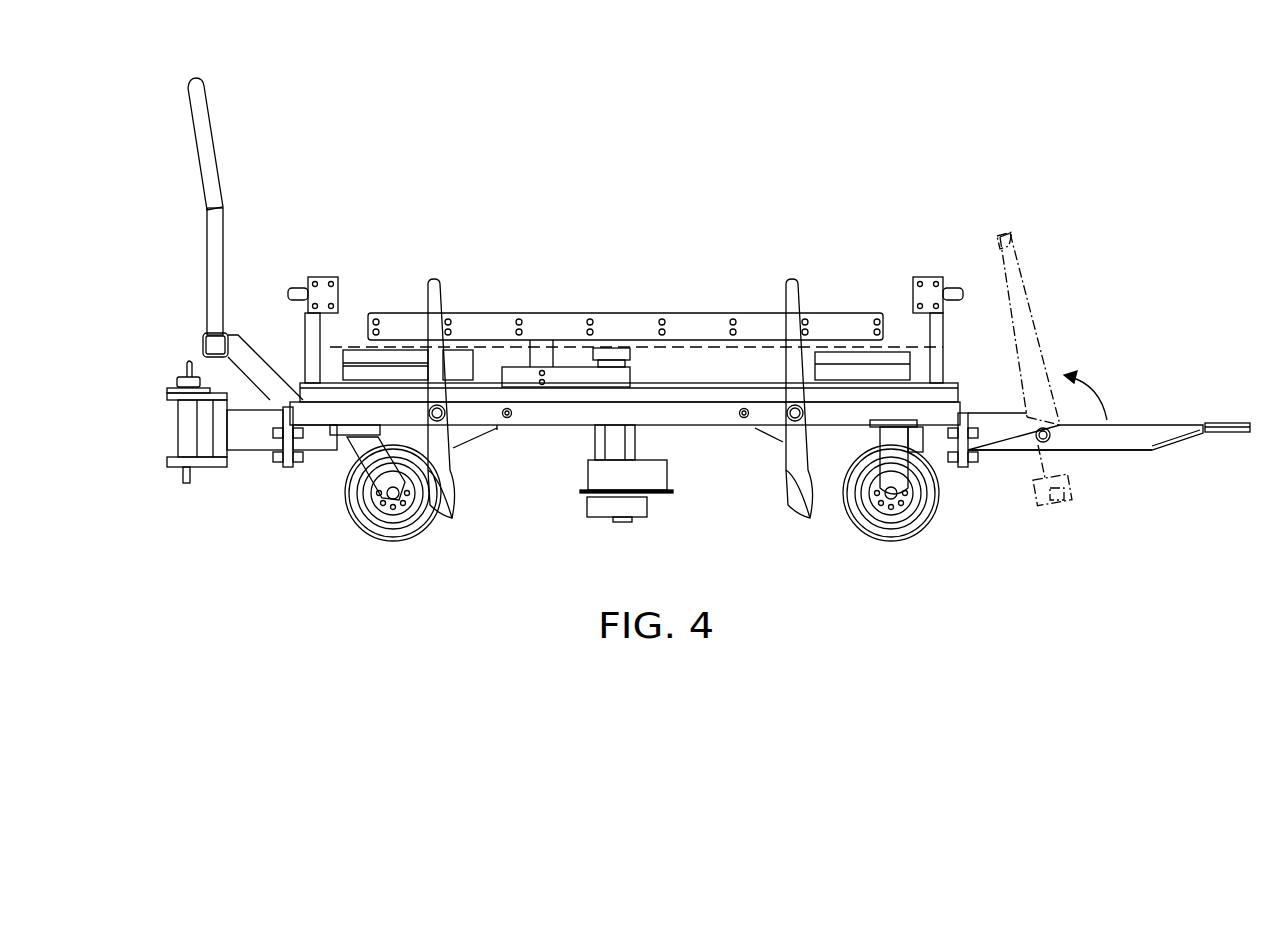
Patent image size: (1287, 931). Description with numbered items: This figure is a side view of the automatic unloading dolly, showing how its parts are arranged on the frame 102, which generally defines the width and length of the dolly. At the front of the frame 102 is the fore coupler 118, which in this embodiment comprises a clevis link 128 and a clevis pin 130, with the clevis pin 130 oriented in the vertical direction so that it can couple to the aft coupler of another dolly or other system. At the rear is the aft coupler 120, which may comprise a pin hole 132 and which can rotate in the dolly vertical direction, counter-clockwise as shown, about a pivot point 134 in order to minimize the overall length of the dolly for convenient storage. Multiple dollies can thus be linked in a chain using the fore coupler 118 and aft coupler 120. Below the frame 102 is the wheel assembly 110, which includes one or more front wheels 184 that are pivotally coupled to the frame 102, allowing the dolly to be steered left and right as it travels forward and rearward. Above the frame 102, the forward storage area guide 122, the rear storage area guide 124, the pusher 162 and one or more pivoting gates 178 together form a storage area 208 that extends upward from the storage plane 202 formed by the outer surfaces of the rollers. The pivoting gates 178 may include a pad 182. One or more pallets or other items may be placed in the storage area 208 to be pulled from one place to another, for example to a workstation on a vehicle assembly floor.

The frame 102 is at (518, 518).
The wheel assembly 110 is at (948, 576).
The fore coupler 118 is at (196, 468).
The aft coupler 120 is at (1135, 432).
The forward storage area guide 122 is at (325, 279).
The rear storage area guide 124 is at (922, 279).
The clevis link 128 is at (168, 392).
The clevis pin 130 is at (185, 445).
The pin hole 132 is at (1236, 412).
The pivot point 134 is at (1050, 437).
The pusher 162 is at (555, 316).
The pivoting gate 178 is at (432, 279).
The pad 182 is at (887, 532).
The front wheel 184 is at (393, 532).
The storage plane 202 is at (945, 347).
The storage area 208 is at (718, 212).